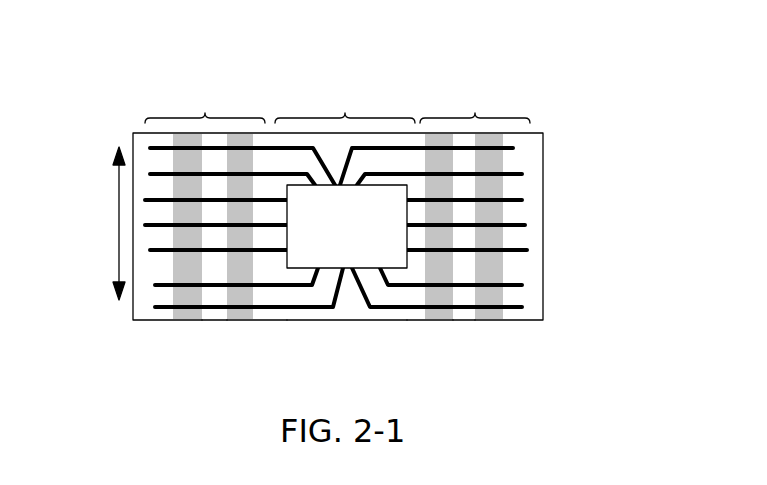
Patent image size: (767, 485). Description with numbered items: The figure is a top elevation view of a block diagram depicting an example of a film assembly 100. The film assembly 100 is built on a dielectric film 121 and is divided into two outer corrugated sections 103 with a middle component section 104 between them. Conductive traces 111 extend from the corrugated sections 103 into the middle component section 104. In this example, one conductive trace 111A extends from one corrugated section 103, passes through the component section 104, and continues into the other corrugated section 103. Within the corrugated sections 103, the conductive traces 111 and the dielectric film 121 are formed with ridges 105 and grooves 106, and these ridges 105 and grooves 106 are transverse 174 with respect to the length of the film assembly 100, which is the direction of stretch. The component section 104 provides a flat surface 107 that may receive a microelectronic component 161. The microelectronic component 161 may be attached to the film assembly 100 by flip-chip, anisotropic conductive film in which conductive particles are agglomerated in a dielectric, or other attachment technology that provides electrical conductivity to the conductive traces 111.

The film assembly 100 is at (578, 69).
The corrugated section 103 is at (338, 73).
The component section 104 is at (345, 73).
The ridge 105 is at (220, 311).
The groove 106 is at (192, 311).
The flat surface 107 is at (343, 308).
The conductive trace 111 is at (156, 304).
The conductive trace 111A is at (513, 147).
The dielectric film 121 is at (543, 203).
The microelectronic component 161 is at (347, 226).
The transverse direction 174 is at (116, 149).